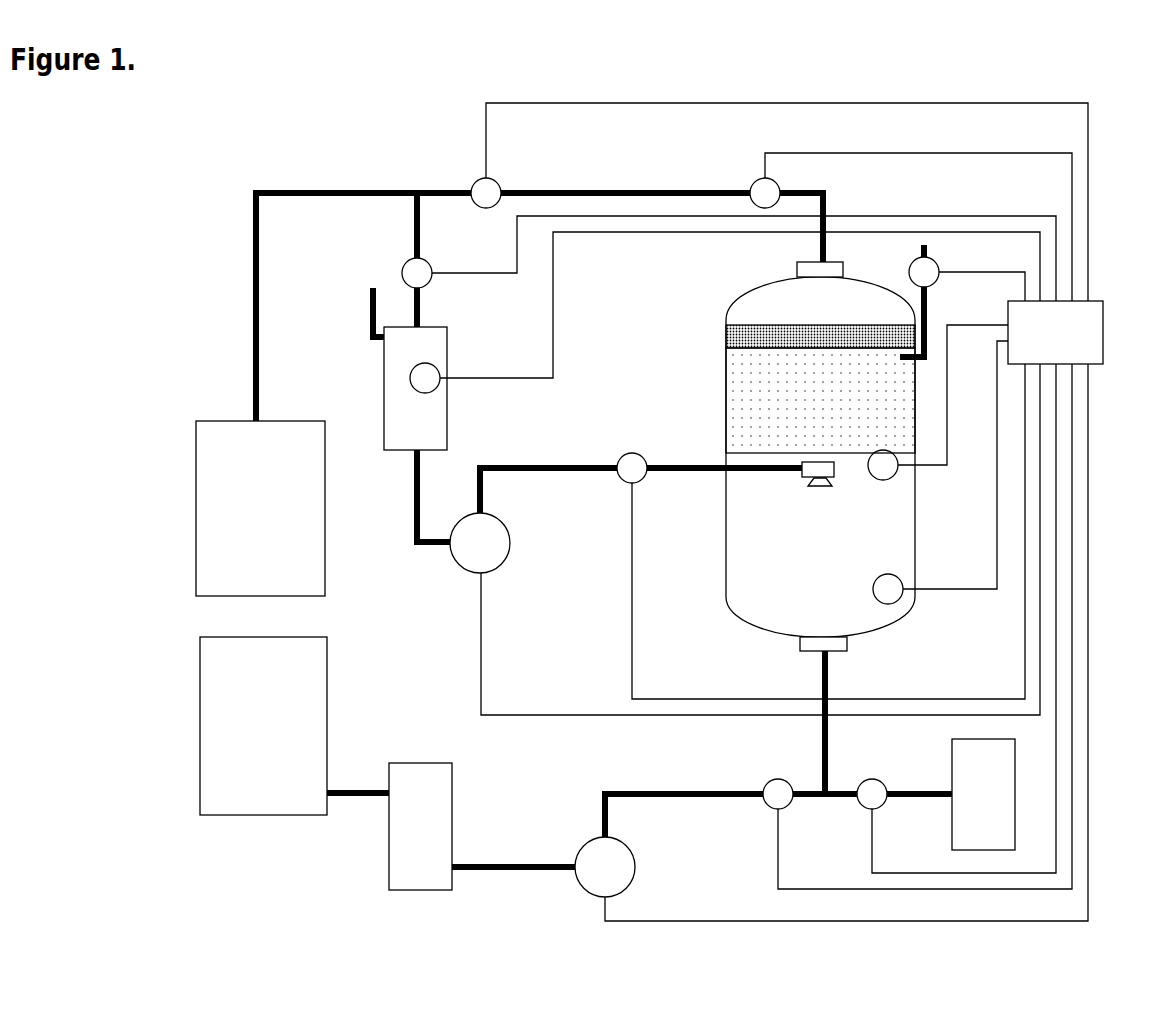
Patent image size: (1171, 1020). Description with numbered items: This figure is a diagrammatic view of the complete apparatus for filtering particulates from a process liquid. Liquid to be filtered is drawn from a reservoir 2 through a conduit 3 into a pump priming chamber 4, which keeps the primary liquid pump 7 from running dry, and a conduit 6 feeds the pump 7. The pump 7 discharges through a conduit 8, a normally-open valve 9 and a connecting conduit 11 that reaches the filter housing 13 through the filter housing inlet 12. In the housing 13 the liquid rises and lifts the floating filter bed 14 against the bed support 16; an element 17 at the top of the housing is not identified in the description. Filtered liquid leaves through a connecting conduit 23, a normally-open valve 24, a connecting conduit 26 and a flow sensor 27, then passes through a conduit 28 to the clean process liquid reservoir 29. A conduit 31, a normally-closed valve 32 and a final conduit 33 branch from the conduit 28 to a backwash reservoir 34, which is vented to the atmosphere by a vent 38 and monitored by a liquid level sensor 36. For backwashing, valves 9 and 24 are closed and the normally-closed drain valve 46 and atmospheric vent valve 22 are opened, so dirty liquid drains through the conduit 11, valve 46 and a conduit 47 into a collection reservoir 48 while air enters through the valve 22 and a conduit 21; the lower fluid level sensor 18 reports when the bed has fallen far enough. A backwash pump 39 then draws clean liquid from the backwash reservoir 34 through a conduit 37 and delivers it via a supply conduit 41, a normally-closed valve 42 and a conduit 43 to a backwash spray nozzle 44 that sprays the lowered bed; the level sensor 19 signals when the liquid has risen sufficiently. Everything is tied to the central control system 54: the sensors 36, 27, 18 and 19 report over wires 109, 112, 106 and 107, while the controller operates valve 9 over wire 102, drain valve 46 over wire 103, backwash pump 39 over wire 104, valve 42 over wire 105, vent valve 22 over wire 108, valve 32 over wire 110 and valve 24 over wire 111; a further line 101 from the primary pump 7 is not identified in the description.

The reservoir 2 is at (265, 828).
The conduit 3 is at (357, 778).
The pump priming chamber 4 is at (462, 795).
The conduit 6 is at (508, 857).
The primary liquid pump 7 is at (577, 890).
The conduit 8 is at (660, 788).
The normally-open valve 9 is at (763, 808).
The connecting conduit 11 is at (815, 756).
The filter housing inlet 12 is at (853, 655).
The filter housing 13 is at (723, 555).
The filter bed 14 is at (772, 403).
The bed support 16 is at (773, 340).
The top inlet 17 is at (787, 270).
The lower fluid level sensor 18 is at (910, 570).
The level sensor 19 is at (870, 478).
The conduit 21 is at (933, 300).
The atmospheric vent valve 22 is at (907, 265).
The connecting conduit 23 is at (816, 187).
The normally-open valve 24 is at (745, 185).
The connecting conduit 26 is at (567, 190).
The flow sensor 27 is at (462, 178).
The conduit 28 is at (263, 263).
The clean process liquid reservoir 29 is at (342, 567).
The conduit 31 is at (407, 222).
The normally-closed valve 32 is at (437, 262).
The final conduit 33 is at (425, 307).
The backwash reservoir 34 is at (457, 353).
The liquid level sensor 36 is at (443, 390).
The conduit 37 is at (402, 498).
The vent 38 is at (362, 323).
The backwash pump 39 is at (508, 568).
The supply conduit 41 is at (577, 460).
The normally-closed valve 42 is at (613, 483).
The conduit 43 is at (707, 462).
The backwash spray nozzle 44 is at (805, 478).
The liquid drain valve 46 is at (852, 803).
The conduit 47 is at (913, 785).
The collection reservoir 48 is at (947, 820).
The central control system 54 is at (1105, 325).
The control line 101 is at (627, 915).
The wire 102 is at (772, 868).
The wire 103 is at (865, 864).
The wire 104 is at (493, 708).
The wire 105 is at (642, 695).
The wire 106 is at (945, 593).
The wire 107 is at (935, 472).
The wire 108 is at (960, 267).
The wire 109 is at (558, 257).
The wire 110 is at (869, 210).
The wire 111 is at (1062, 177).
The wire 112 is at (1075, 123).